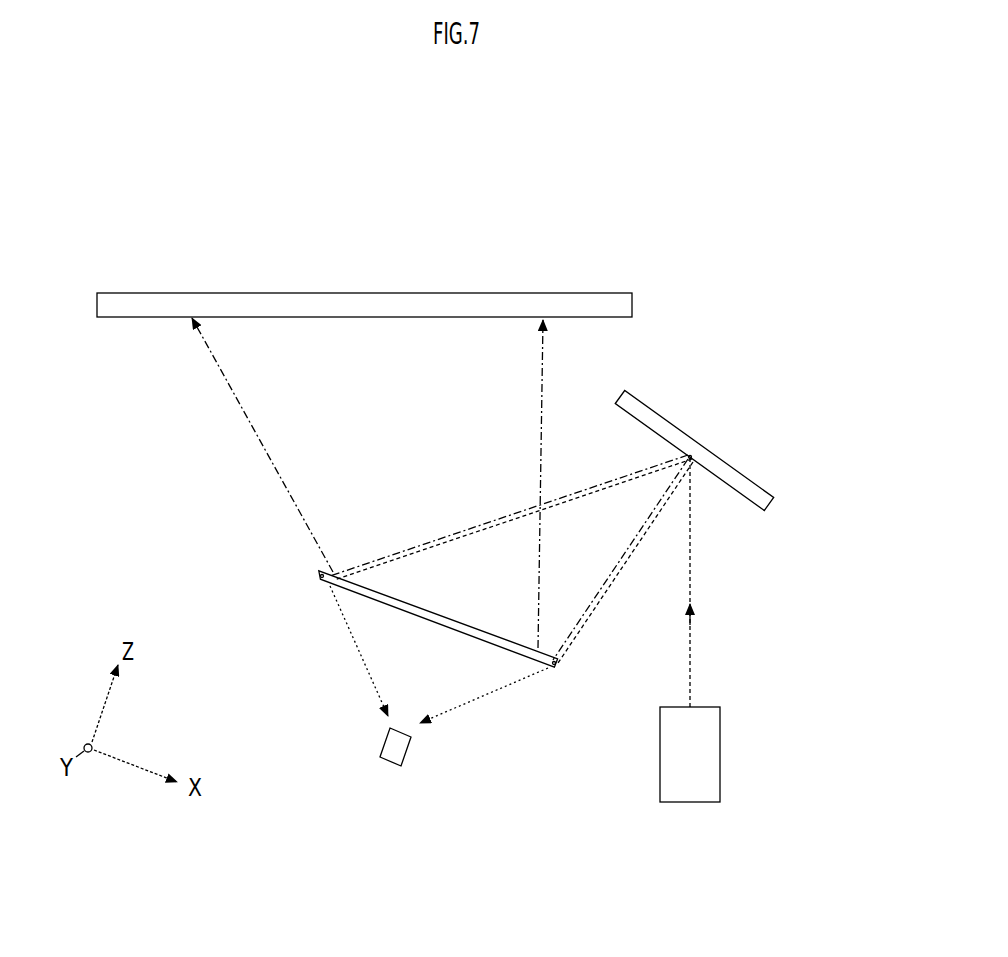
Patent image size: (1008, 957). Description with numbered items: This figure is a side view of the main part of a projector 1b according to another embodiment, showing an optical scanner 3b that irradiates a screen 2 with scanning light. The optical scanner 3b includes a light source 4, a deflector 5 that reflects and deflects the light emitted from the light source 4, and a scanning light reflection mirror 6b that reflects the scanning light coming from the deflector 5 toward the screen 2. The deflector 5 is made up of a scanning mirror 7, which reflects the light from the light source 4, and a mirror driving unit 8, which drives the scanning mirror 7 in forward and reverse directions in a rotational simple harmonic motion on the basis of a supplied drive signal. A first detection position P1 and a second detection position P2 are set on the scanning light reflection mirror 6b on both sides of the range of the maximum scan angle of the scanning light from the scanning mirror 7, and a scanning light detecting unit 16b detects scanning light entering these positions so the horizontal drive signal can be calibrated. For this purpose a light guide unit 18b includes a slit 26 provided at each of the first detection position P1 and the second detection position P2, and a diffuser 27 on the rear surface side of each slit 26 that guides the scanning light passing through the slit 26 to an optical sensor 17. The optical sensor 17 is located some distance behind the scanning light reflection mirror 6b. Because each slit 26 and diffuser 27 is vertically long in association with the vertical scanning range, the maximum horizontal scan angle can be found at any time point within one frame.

The projector 1b is at (782, 237).
The screen 2 is at (276, 292).
The optical scanner 3b is at (197, 460).
The light source 4 is at (721, 752).
The deflector 5 is at (743, 363).
The scanning light reflection mirror 6b is at (440, 607).
The scanning mirror 7 is at (700, 442).
The mirror driving unit 8 is at (750, 478).
The scanning light detecting unit 16b is at (227, 583).
The optical sensor 17 is at (391, 766).
The light guide unit 18b is at (320, 651).
The slit 26 is at (320, 574).
The diffuser 27 is at (323, 583).
The first detection position P1 is at (556, 658).
The second detection position P2 is at (326, 572).